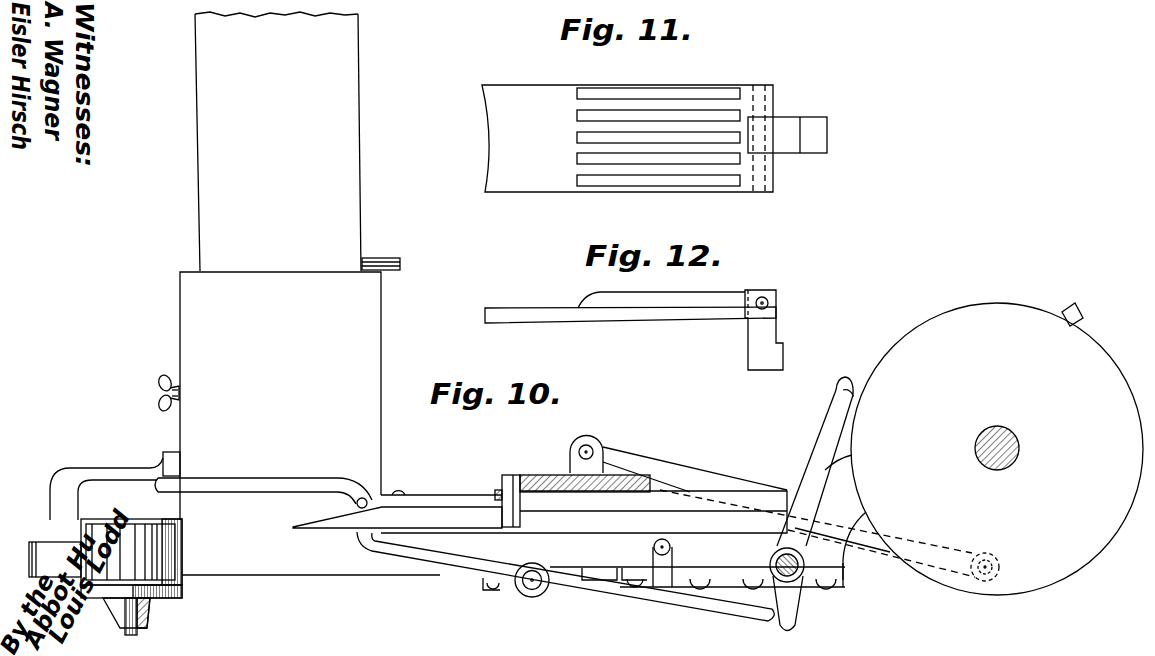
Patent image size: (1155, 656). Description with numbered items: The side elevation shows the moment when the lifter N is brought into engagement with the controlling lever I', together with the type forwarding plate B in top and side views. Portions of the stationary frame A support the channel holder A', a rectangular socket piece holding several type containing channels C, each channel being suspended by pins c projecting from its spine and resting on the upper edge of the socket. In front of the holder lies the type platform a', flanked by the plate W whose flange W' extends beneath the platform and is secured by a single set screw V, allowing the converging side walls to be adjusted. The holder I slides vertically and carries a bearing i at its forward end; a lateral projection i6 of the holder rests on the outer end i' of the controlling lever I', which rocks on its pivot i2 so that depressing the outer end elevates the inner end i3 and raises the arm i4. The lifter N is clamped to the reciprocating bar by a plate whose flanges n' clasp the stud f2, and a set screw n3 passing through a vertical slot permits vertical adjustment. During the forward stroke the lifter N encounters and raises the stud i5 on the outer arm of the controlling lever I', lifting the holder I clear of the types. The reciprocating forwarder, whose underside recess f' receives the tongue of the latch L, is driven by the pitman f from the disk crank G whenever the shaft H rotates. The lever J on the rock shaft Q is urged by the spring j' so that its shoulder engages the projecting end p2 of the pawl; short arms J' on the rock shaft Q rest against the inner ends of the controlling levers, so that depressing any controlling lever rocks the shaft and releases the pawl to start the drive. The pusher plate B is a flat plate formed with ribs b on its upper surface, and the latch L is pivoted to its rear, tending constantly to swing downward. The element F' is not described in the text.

In FIG. 10, the type containing channel C is at (278, 141).
In FIG. 10, the pin c is at (381, 253).
In FIG. 10, the channel holder A' is at (280, 396).
In FIG. 10, the flange W' is at (157, 392).
In FIG. 10, the holder I is at (106, 479).
In FIG. 10, the bearing i is at (107, 500).
In FIG. 10, the lateral projection i6 is at (182, 472).
In FIG. 10, the outer end of controlling lever i' is at (263, 480).
In FIG. 10, the stud i5 is at (367, 498).
In FIG. 10, the lifter N is at (397, 517).
In FIG. 10, the stationary frame A is at (342, 533).
In FIG. 10, the type platform a' is at (55, 548).
In FIG. 10, the plate W is at (131, 558).
In FIG. 10, the set screw V is at (156, 612).
In FIG. 10, the flange n' is at (508, 487).
In FIG. 10, the set screw n3 is at (496, 491).
In FIG. 10, the slide bar F' is at (644, 492).
In FIG. 10, the stud f2 is at (522, 507).
In FIG. 10, the pitman f is at (772, 507).
In FIG. 10, the arm i4 is at (654, 547).
In FIG. 10, the controlling lever I' is at (565, 576).
In FIG. 10, the pivot i2 is at (530, 591).
In FIG. 10, the inner end of controlling lever i3 is at (611, 608).
In FIG. 10, the rock shaft Q is at (771, 562).
In FIG. 10, the lever J is at (815, 468).
In FIG. 10, the spring j' is at (845, 375).
In FIG. 10, the short arm J' is at (797, 603).
In FIG. 10, the recess f' is at (842, 517).
In FIG. 10, the disk crank G is at (997, 449).
In FIG. 10, the shaft H is at (1028, 446).
In FIG. 10, the projecting end of pawl p2 is at (1083, 318).
In FIG. 11, the pusher plate B is at (627, 138).
In FIG. 12, the pusher plate B is at (630, 301).
In FIG. 11, the rib b is at (658, 137).
In FIG. 12, the rib b is at (661, 293).
In FIG. 11, the latch L is at (787, 138).
In FIG. 12, the latch L is at (772, 330).